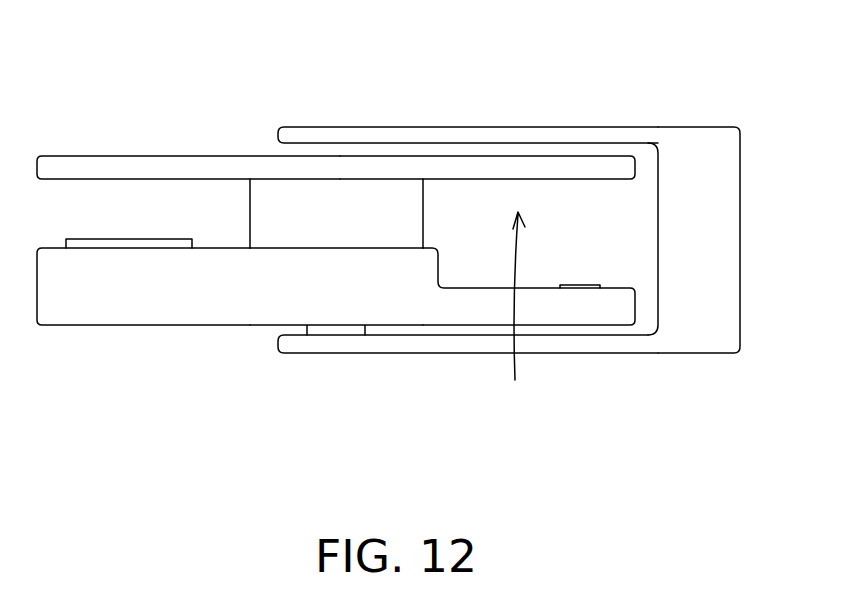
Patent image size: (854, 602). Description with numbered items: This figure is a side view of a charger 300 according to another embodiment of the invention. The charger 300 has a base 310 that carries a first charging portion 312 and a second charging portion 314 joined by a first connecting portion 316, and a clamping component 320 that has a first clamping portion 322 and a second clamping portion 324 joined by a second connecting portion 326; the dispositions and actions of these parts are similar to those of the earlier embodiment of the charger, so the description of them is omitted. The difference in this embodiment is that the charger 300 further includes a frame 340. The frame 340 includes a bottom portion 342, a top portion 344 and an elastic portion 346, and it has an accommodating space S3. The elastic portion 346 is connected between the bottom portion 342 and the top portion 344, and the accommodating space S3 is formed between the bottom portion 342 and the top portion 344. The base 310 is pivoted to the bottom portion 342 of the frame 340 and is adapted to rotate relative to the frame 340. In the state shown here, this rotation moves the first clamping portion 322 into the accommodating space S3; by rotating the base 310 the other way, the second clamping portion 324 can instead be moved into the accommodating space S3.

The charger 300 is at (788, 438).
The base 310 is at (122, 416).
The first charging portion 312 is at (477, 308).
The second charging portion 314 is at (135, 290).
The first connecting portion 316 is at (282, 232).
The clamping component 320 is at (198, 54).
The first clamping portion 322 is at (470, 168).
The second clamping portion 324 is at (138, 170).
The second connecting portion 326 is at (338, 188).
The frame 340 is at (517, 54).
The bottom portion 342 is at (550, 347).
The top portion 344 is at (527, 133).
The elastic portion 346 is at (697, 253).
The accommodating space S3 is at (512, 315).